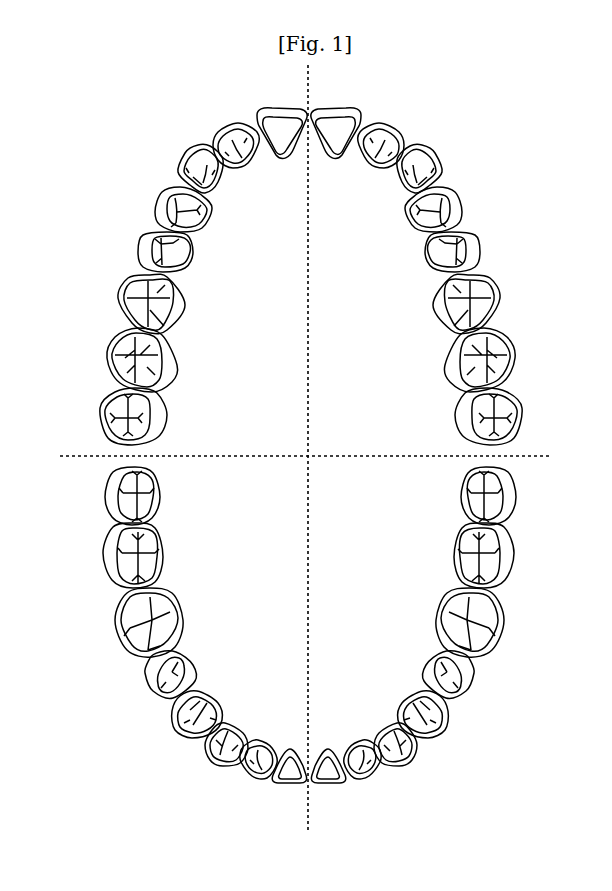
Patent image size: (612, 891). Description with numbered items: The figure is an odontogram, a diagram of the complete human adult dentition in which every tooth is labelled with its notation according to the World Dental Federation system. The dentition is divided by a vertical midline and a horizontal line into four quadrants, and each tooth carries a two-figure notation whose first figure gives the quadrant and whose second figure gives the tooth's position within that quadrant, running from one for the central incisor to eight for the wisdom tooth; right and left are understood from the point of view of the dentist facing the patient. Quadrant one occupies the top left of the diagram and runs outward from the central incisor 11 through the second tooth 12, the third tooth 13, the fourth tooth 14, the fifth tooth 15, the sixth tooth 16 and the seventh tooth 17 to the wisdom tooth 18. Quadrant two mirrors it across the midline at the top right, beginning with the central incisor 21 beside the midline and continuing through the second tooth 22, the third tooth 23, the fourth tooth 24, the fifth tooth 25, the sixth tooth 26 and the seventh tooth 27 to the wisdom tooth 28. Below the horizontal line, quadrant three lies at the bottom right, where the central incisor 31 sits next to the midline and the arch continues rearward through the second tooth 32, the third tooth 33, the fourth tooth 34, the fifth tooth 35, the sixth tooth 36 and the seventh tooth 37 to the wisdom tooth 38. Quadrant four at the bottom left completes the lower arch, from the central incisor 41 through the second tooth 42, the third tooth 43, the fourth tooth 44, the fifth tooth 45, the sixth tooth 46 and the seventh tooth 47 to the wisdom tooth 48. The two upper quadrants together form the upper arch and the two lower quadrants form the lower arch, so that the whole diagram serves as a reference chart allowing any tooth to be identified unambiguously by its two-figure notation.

The central incisor of quadrant one 11 is at (282, 116).
The second tooth of quadrant one 12 is at (231, 130).
The third tooth of quadrant one 13 is at (186, 160).
The fourth tooth of quadrant one 14 is at (165, 209).
The fifth tooth of quadrant one 15 is at (145, 252).
The sixth tooth of quadrant one 16 is at (131, 304).
The seventh tooth of quadrant one 17 is at (122, 360).
The wisdom tooth of quadrant one 18 is at (112, 416).
The central incisor of quadrant two 21 is at (336, 115).
The second tooth of quadrant two 22 is at (387, 130).
The third tooth of quadrant two 23 is at (437, 168).
The fourth tooth of quadrant two 24 is at (454, 209).
The fifth tooth of quadrant two 25 is at (471, 250).
The sixth tooth of quadrant two 26 is at (485, 304).
The seventh tooth of quadrant two 27 is at (498, 360).
The wisdom tooth of quadrant two 28 is at (506, 416).
The central incisor of quadrant three 31 is at (330, 784).
The second tooth of quadrant three 32 is at (370, 777).
The third tooth of quadrant three 33 is at (409, 756).
The fourth tooth of quadrant three 34 is at (439, 720).
The fifth tooth of quadrant three 35 is at (468, 676).
The sixth tooth of quadrant three 36 is at (489, 622).
The seventh tooth of quadrant three 37 is at (504, 555).
The wisdom tooth of quadrant three 38 is at (507, 496).
The central incisor of quadrant four 41 is at (288, 783).
The second tooth of quadrant four 42 is at (252, 777).
The third tooth of quadrant four 43 is at (211, 758).
The fourth tooth of quadrant four 44 is at (178, 723).
The fifth tooth of quadrant four 45 is at (152, 679).
The sixth tooth of quadrant four 46 is at (129, 622).
The seventh tooth of quadrant four 47 is at (113, 555).
The wisdom tooth of quadrant four 48 is at (111, 496).